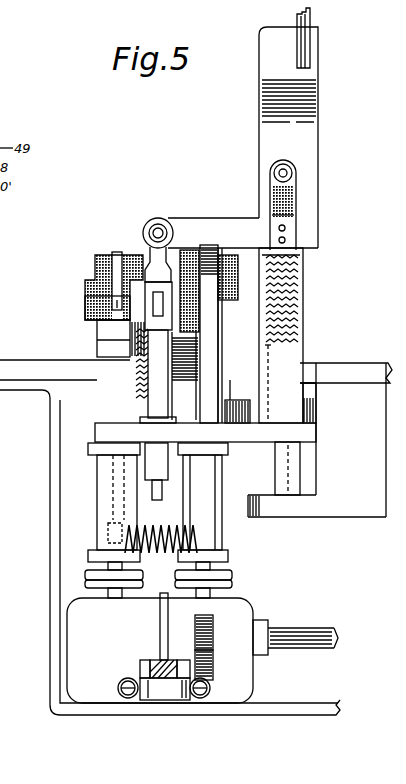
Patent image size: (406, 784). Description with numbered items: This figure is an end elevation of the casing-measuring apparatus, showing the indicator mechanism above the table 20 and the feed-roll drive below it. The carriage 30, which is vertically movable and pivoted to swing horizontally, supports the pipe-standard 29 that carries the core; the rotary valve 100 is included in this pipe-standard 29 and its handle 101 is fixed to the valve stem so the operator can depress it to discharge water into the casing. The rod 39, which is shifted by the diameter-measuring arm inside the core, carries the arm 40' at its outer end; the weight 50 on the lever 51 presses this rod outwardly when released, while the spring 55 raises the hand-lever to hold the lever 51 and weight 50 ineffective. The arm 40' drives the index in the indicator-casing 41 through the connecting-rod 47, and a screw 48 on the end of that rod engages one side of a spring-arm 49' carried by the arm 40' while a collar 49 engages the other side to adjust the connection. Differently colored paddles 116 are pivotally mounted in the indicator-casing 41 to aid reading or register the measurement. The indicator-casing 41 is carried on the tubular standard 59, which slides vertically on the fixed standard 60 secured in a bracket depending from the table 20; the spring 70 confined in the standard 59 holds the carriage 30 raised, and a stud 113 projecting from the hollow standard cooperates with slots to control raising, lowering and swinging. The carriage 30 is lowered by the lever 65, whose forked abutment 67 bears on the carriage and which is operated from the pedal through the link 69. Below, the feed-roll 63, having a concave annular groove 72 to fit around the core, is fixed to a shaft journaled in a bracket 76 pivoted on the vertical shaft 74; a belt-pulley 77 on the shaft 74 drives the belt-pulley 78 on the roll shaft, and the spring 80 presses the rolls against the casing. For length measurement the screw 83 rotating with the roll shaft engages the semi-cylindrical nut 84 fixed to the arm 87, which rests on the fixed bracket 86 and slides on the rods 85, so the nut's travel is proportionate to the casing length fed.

The paddles 116 is at (304, 41).
The indicator-casing 41 is at (320, 116).
The connecting-rod 47 is at (289, 166).
The collar 49 is at (316, 175).
The screw 48 is at (297, 196).
The spring-arm 49' is at (314, 213).
The arm 40' is at (230, 233).
The rod 39 is at (160, 222).
The lever 51 is at (150, 258).
The spring 55 is at (143, 362).
The concave annular groove 72 is at (88, 288).
The feed-roll 63 is at (86, 298).
The handle 101 is at (114, 272).
The rotary valve 100 is at (140, 313).
The weight 50 is at (187, 333).
The link 69 is at (235, 297).
The spring 70 is at (303, 285).
The tubular standard 59 is at (300, 305).
The stud 113 is at (270, 358).
The table 20 is at (371, 368).
The standard 60 is at (293, 467).
The forked abutment 67 is at (312, 385).
The lever 65 is at (237, 398).
The carriage 30 is at (242, 437).
The pipe-standard 29 is at (147, 478).
The bracket 76 is at (98, 526).
The vertical shaft 74 is at (103, 566).
The belt-pulley 78 is at (232, 583).
The spring 80 is at (162, 530).
The belt-pulley 77 is at (83, 586).
The rods 85 is at (112, 713).
The screw 83 is at (214, 628).
The semi-cylindrical nut 84 is at (211, 677).
The arm 87 is at (150, 661).
The fixed bracket 86 is at (172, 702).